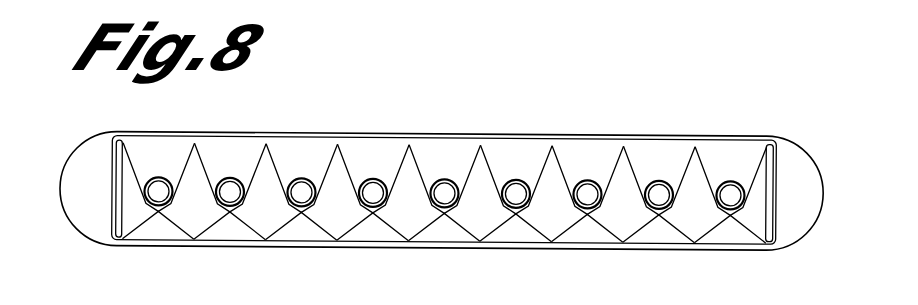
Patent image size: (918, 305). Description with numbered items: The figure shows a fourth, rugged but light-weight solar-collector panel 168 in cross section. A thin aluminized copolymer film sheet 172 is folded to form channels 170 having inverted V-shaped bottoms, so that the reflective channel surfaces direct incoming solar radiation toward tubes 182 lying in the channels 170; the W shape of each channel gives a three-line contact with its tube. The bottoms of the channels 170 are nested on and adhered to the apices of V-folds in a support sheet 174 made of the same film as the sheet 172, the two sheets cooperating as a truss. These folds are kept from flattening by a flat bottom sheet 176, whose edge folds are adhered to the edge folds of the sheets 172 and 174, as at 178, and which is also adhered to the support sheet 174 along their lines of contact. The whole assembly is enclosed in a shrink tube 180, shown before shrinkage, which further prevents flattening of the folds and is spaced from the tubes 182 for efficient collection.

The panel 168 is at (506, 126).
The channels 170 is at (290, 164).
The film sheet 172 is at (347, 161).
The support sheet 174 is at (350, 226).
The flat bottom sheet 176 is at (458, 239).
The edge fold adhesion 178 is at (776, 177).
The shrink tube 180 is at (670, 133).
The tubes 182 is at (585, 170).